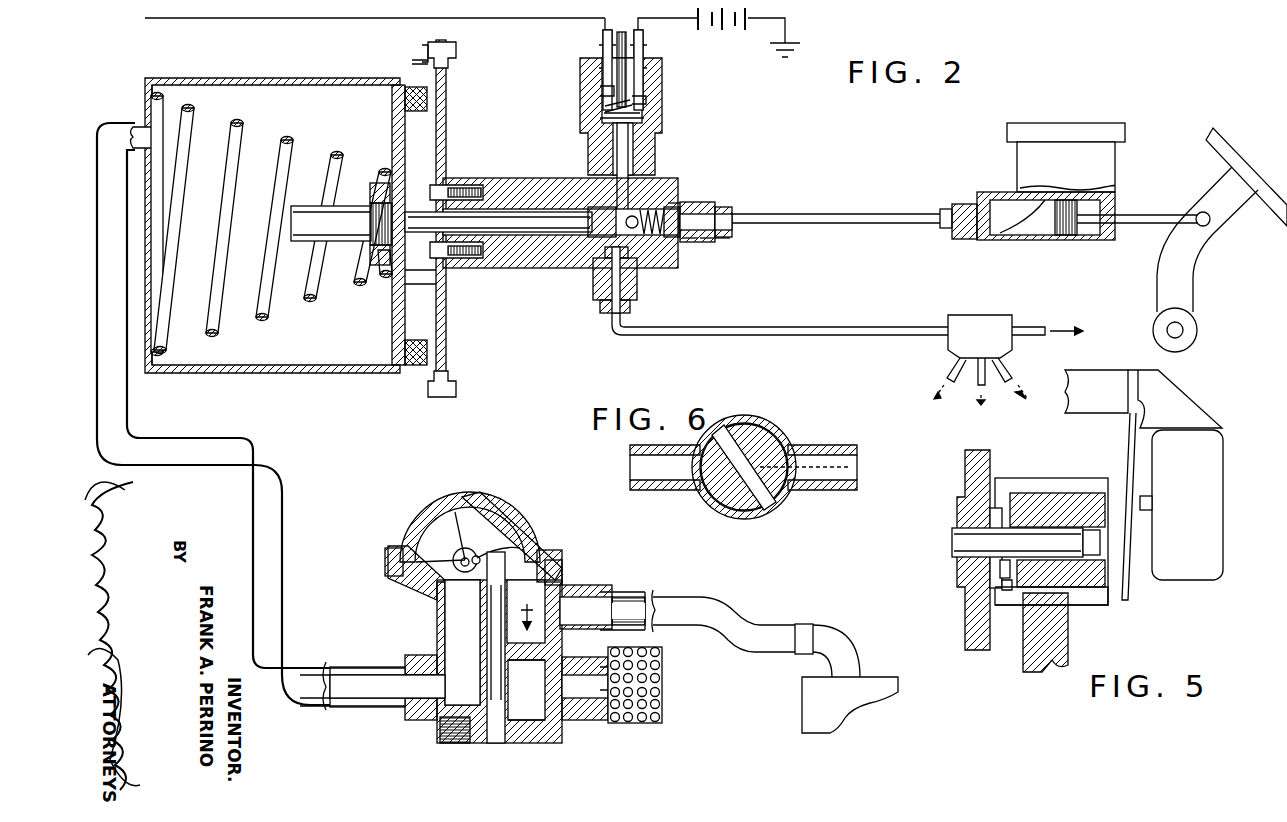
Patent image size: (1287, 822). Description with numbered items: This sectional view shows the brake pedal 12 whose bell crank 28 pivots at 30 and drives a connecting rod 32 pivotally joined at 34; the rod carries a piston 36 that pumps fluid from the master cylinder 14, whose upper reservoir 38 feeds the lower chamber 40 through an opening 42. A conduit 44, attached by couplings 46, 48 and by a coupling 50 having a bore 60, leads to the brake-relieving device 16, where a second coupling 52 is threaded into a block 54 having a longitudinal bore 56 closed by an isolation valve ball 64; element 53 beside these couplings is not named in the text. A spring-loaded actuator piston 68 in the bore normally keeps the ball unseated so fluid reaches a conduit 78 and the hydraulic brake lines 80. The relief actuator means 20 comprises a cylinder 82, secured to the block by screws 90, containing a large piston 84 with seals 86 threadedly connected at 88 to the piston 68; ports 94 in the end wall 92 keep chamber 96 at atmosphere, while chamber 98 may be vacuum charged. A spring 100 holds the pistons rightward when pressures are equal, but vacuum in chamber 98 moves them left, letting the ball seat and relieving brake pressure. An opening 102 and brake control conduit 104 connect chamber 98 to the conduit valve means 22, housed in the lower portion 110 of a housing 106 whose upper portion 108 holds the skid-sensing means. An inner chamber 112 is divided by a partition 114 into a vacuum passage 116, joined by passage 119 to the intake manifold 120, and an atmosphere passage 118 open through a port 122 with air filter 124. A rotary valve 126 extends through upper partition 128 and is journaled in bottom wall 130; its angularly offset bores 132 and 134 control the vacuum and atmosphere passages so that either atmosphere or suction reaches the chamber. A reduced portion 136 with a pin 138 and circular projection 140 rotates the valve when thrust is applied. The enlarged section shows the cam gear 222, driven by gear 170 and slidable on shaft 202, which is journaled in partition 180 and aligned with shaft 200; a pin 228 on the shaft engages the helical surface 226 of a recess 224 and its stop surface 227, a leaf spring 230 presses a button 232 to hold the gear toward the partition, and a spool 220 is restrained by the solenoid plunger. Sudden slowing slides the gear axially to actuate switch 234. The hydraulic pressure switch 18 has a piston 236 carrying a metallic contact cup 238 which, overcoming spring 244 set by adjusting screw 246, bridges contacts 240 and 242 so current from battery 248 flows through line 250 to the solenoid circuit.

In FIG. 2, the brake pedal 12 is at (1252, 140).
In FIG. 2, the master cylinder 14 is at (1085, 114).
In FIG. 2, the brake-relieving device 16 is at (702, 200).
In FIG. 2, the hydraulic pressure switch 18 is at (668, 80).
In FIG. 2, the relief actuator means 20 is at (322, 102).
In FIG. 2, the conduit valve means 22 is at (545, 736).
In FIG. 2, the bell crank 28 is at (1185, 283).
In FIG. 2, the pivot point 30 is at (1180, 332).
In FIG. 2, the connecting rod 32 is at (1140, 214).
In FIG. 2, the pivotal connection 34 is at (1212, 224).
In FIG. 2, the piston 36 is at (1060, 238).
In FIG. 2, the upper reservoir 38 is at (1108, 160).
In FIG. 2, the lower chamber 40 is at (990, 236).
In FIG. 2, the opening 42 is at (1027, 236).
In FIG. 2, the conduit 44 is at (834, 220).
In FIG. 2, the coupling 46 is at (954, 212).
In FIG. 2, the coupling 48 is at (967, 205).
In FIG. 2, the coupling 50 is at (728, 212).
In FIG. 2, the second coupling 52 is at (712, 206).
In FIG. 2, the seal 53 is at (688, 242).
In FIG. 2, the block 54 is at (696, 190).
In FIG. 2, the bore 56 is at (500, 195).
In FIG. 2, the bore 60 is at (720, 240).
In FIG. 2, the isolation valve ball 64 is at (638, 272).
In FIG. 2, the actuator piston 68 is at (522, 214).
In FIG. 2, the conduit 78 is at (789, 326).
In FIG. 2, the hydraulic brake lines 80 is at (1030, 325).
In FIG. 2, the cylinder housing 82 is at (340, 78).
In FIG. 2, the large piston 84 is at (392, 128).
In FIG. 2, the seals 86 is at (398, 362).
In FIG. 2, the threaded connection 88 is at (362, 248).
In FIG. 2, the screws 90 is at (470, 178).
In FIG. 2, the end wall 92 is at (448, 99).
In FIG. 2, the ports 94 is at (447, 135).
In FIG. 2, the chamber 96 is at (428, 292).
In FIG. 2, the chamber 98 is at (297, 355).
In FIG. 2, the spring 100 is at (190, 138).
In FIG. 2, the opening 102 is at (140, 125).
In FIG. 2, the brake control conduit 104 is at (117, 418).
In FIG. 2, the housing 106 is at (440, 588).
In FIG. 2, the upper portion 108 is at (508, 492).
In FIG. 2, the lower portion 110 is at (405, 720).
In FIG. 2, the inner chamber 112 is at (445, 646).
In FIG. 6, the inner chamber 112 is at (656, 472).
In FIG. 2, the partition 114 is at (526, 690).
In FIG. 2, the vacuum passage 116 is at (565, 578).
In FIG. 6, the vacuum passage 116 is at (846, 455).
In FIG. 2, the atmosphere passage 118 is at (528, 743).
In FIG. 2, the passage 119 is at (714, 611).
In FIG. 2, the intake manifold 120 is at (878, 700).
In FIG. 2, the port 122 is at (585, 722).
In FIG. 2, the air filter 124 is at (663, 708).
In FIG. 2, the rotary valve 126 is at (490, 740).
In FIG. 6, the rotary valve 126 is at (771, 431).
In FIG. 2, the upper partition 128 is at (540, 552).
In FIG. 2, the bottom wall 130 is at (507, 743).
In FIG. 2, the bore 132 is at (580, 652).
In FIG. 6, the bore 132 is at (786, 491).
In FIG. 2, the bore 134 is at (526, 682).
In FIG. 6, the bore 134 is at (857, 463).
In FIG. 2, the reduced portion 136 is at (515, 523).
In FIG. 2, the pin 138 is at (505, 540).
In FIG. 2, the circular projection 140 is at (487, 528).
In FIG. 5, the drive gear 170 is at (1062, 645).
In FIG. 5, the partition 180 is at (967, 478).
In FIG. 2, the shaft 200 is at (457, 522).
In FIG. 5, the shaft 202 is at (956, 556).
In FIG. 2, the spool 220 is at (403, 532).
In FIG. 5, the cam gear 222 is at (1050, 510).
In FIG. 5, the recess 224 is at (1010, 600).
In FIG. 5, the helical surface 226 is at (998, 500).
In FIG. 5, the stop surface 227 is at (985, 600).
In FIG. 5, the pin 228 is at (985, 578).
In FIG. 5, the leaf spring 230 is at (1125, 445).
In FIG. 5, the button 232 is at (1110, 490).
In FIG. 5, the switch 234 is at (1203, 506).
In FIG. 2, the piston 236 is at (614, 166).
In FIG. 2, the metallic contact cup 238 is at (660, 122).
In FIG. 2, the contact 240 is at (603, 89).
In FIG. 2, the contact 242 is at (648, 100).
In FIG. 2, the spring 244 is at (592, 108).
In FIG. 2, the adjusting screw 246 is at (622, 30).
In FIG. 2, the battery 248 is at (740, 30).
In FIG. 2, the line 250 is at (506, 20).